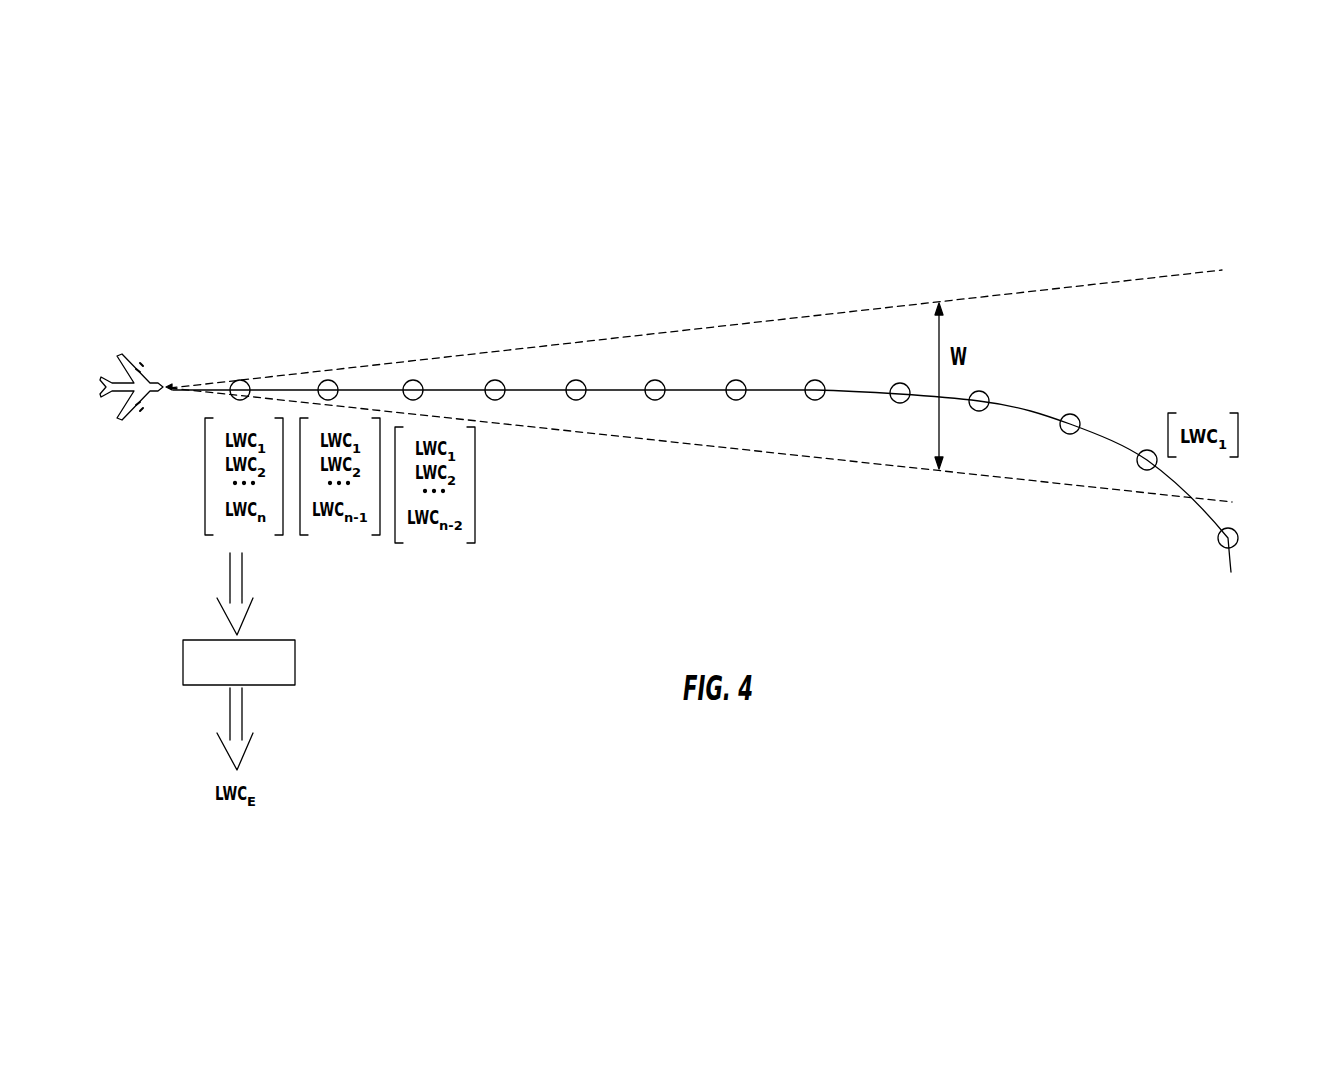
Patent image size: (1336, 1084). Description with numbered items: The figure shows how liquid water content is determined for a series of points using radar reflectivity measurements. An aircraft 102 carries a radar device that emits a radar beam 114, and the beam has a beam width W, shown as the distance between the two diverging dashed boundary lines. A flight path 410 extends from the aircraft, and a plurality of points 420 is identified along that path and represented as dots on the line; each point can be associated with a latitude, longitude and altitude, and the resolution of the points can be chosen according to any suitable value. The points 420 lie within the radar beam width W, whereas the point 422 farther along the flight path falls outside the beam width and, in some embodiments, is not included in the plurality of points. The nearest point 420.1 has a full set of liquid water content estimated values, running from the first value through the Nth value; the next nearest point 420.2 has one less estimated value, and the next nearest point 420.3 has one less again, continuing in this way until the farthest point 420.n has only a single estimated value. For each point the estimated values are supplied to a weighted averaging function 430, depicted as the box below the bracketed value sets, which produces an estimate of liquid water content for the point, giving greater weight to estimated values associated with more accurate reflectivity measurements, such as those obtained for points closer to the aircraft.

The aircraft 102 is at (126, 352).
The radar beam 114 is at (898, 318).
The flight path 410 is at (1022, 410).
The plurality of points 420 is at (775, 400).
The nearest point 420.1 is at (243, 380).
The next nearest point 420.2 is at (330, 380).
The next nearest point 420.3 is at (418, 380).
The farthest point 420.n is at (1147, 471).
The point outside radar beam width 422 is at (1238, 540).
The weighted averaging function 430 is at (188, 663).